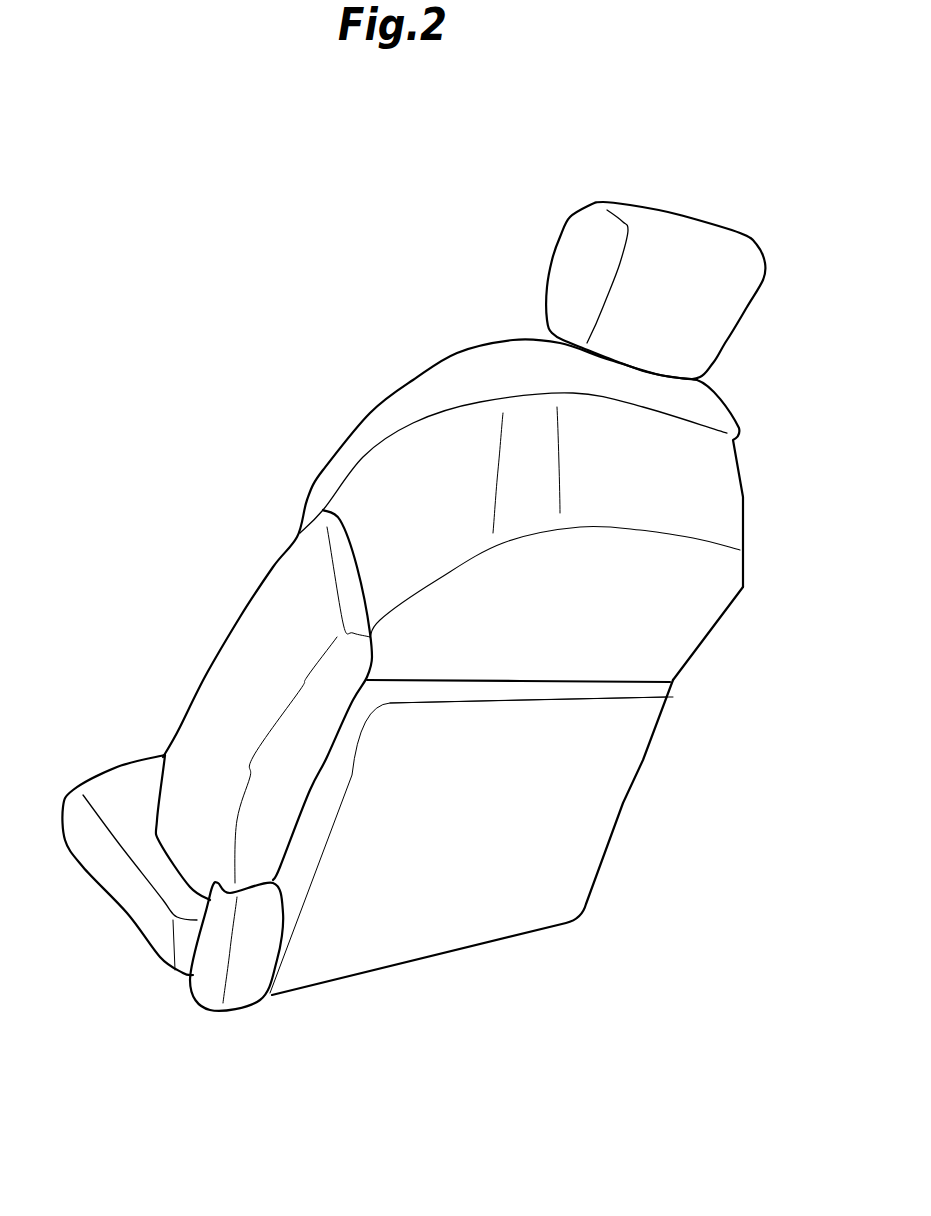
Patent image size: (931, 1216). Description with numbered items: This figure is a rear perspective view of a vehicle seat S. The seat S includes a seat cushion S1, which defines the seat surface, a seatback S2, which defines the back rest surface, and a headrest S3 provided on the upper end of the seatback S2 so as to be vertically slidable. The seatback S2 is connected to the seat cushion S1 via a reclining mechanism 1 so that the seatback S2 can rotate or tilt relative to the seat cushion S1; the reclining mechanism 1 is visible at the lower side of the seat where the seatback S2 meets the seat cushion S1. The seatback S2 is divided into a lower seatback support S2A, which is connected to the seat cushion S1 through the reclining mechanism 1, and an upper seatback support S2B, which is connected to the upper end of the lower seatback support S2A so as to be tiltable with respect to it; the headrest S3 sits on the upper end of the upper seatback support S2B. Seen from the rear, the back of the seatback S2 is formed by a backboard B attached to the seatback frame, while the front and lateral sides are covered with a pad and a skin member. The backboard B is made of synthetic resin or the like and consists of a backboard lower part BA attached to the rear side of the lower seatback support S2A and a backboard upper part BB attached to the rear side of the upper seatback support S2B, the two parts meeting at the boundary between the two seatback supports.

The seat S is at (268, 330).
The seat cushion S1 is at (118, 762).
The seatback S2 is at (412, 380).
The headrest S3 is at (555, 242).
The lower seatback support S2A is at (622, 804).
The upper seatback support S2B is at (750, 525).
The backboard B is at (783, 638).
The backboard lower part BA is at (645, 735).
The backboard upper part BB is at (685, 645).
The reclining mechanism 1 is at (213, 985).